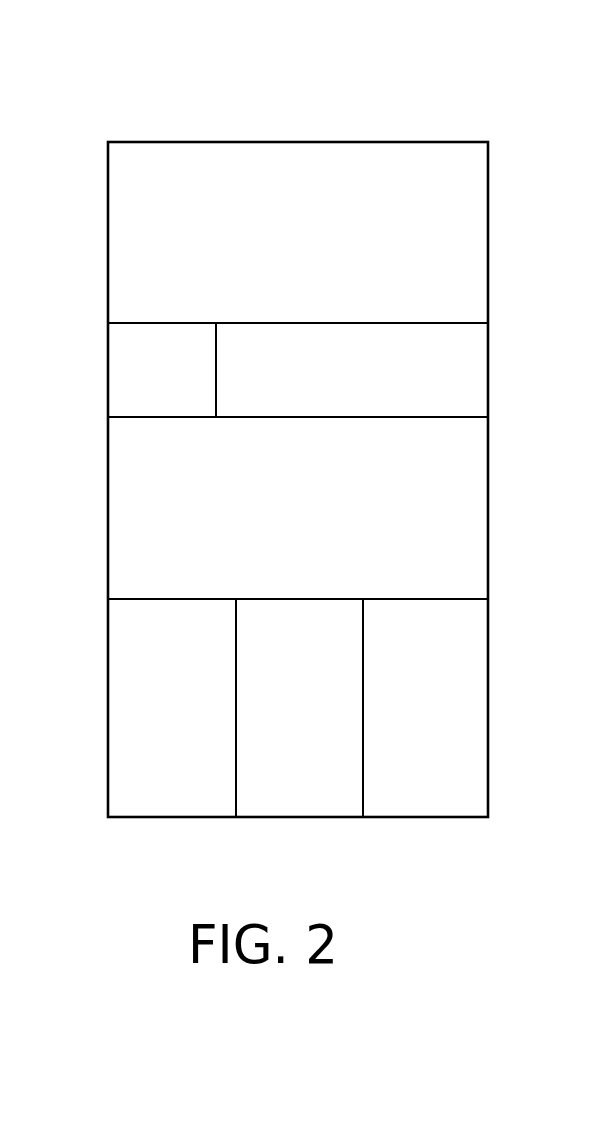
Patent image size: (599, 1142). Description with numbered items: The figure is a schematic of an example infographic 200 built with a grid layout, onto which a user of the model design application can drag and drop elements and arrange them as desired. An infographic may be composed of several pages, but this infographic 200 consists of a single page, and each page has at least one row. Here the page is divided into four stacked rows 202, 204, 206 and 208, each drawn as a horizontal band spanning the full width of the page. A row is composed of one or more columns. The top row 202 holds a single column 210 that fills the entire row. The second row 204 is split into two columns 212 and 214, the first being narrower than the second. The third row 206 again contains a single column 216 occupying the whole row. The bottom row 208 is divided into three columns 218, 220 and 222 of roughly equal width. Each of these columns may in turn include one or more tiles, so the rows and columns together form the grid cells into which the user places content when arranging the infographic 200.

The infographic 200 is at (118, 42).
The row 202 is at (108, 236).
The row 204 is at (108, 372).
The row 206 is at (108, 514).
The row 208 is at (108, 716).
The column 210 is at (176, 194).
The column 212 is at (181, 376).
The column 214 is at (316, 372).
The column 216 is at (189, 470).
The column 218 is at (196, 638).
The column 220 is at (319, 642).
The column 222 is at (445, 644).